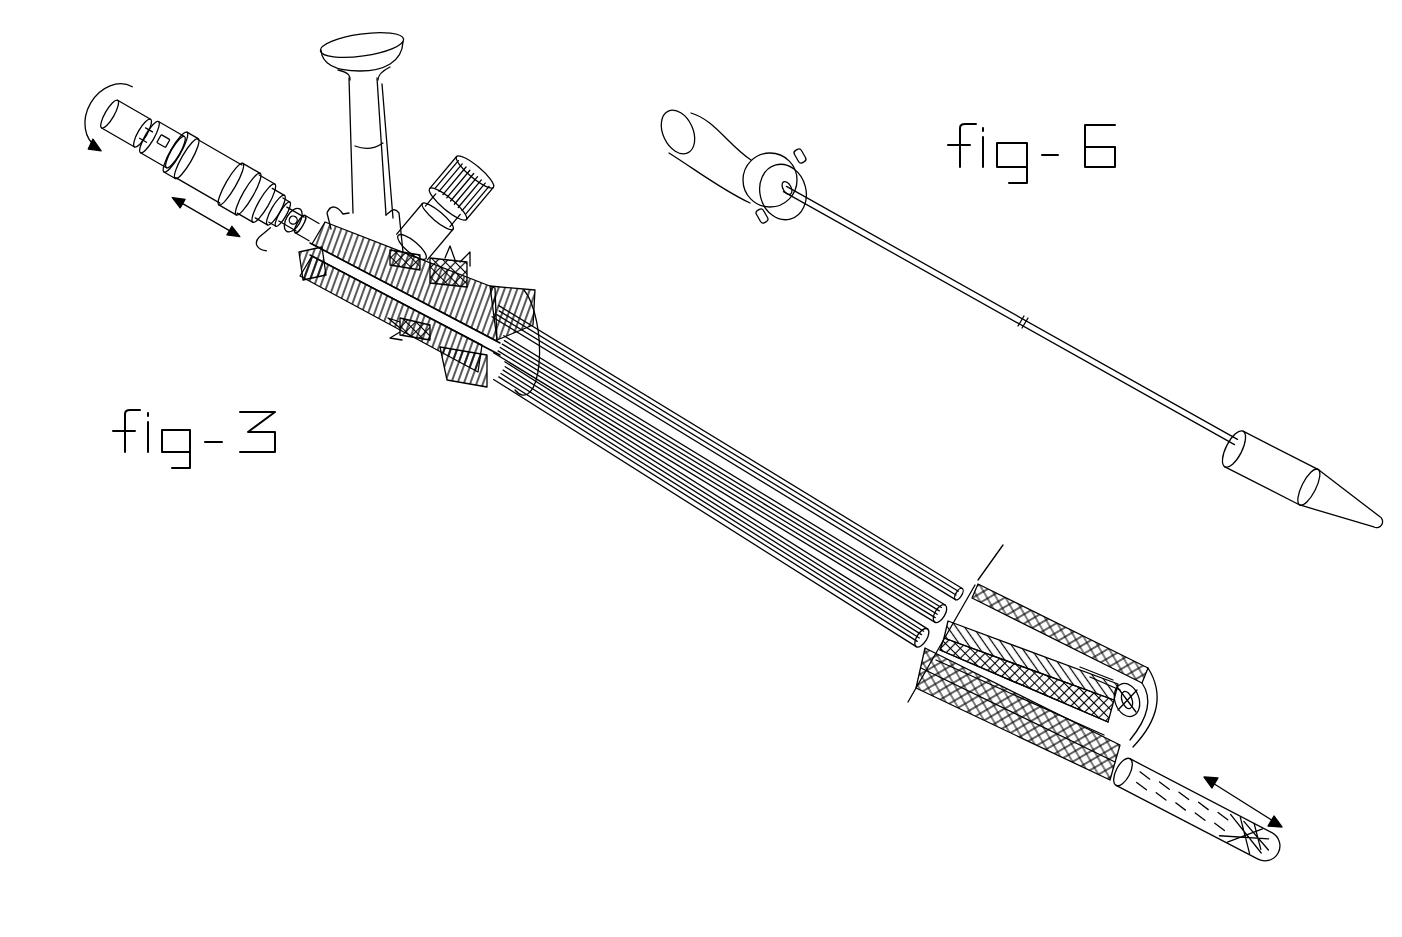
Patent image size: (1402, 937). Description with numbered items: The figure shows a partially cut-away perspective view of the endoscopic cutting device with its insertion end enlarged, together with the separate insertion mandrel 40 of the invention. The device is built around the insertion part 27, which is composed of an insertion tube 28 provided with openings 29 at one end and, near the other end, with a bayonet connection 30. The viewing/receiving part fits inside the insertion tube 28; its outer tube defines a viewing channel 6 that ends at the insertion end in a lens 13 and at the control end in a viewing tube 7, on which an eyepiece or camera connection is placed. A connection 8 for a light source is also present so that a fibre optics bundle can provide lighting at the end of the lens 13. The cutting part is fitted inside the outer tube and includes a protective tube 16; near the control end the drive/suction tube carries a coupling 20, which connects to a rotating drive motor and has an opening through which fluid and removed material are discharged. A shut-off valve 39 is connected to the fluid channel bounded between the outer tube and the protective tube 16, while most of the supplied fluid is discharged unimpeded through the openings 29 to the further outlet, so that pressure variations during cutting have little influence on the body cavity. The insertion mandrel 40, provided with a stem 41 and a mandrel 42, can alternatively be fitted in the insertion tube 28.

In FIG. 3, the coupling 20 is at (173, 131).
In FIG. 3, the viewing tube 7 is at (367, 126).
In FIG. 3, the connection for a light source 8 is at (452, 228).
In FIG. 3, the bayonet connection 30 is at (540, 320).
In FIG. 3, the shut-off valve 39 is at (265, 252).
In FIG. 3, the viewing channel 6 is at (740, 476).
In FIG. 3, the insertion part 27 is at (670, 502).
In FIG. 3, the protective tube 16 is at (845, 573).
In FIG. 3, the openings 29 is at (1068, 612).
In FIG. 3, the insertion tube 28 is at (1147, 670).
In FIG. 3, the lens 13 is at (1150, 706).
In FIG. 6, the insertion mandrel 40 is at (990, 342).
In FIG. 6, the stem 41 is at (1170, 402).
In FIG. 6, the mandrel 42 is at (1290, 478).